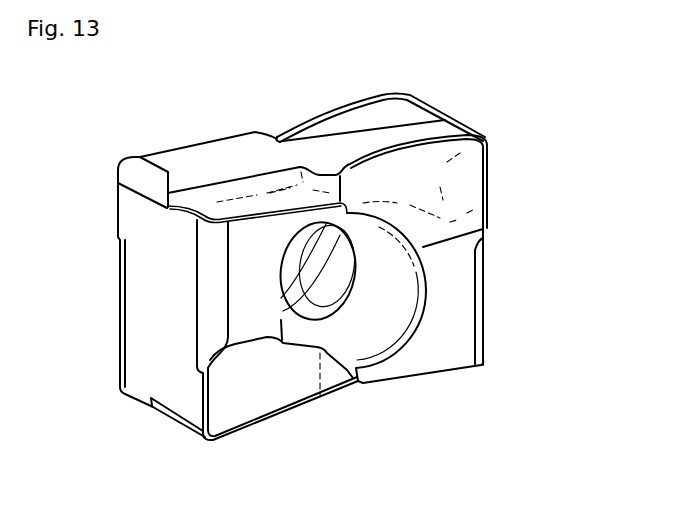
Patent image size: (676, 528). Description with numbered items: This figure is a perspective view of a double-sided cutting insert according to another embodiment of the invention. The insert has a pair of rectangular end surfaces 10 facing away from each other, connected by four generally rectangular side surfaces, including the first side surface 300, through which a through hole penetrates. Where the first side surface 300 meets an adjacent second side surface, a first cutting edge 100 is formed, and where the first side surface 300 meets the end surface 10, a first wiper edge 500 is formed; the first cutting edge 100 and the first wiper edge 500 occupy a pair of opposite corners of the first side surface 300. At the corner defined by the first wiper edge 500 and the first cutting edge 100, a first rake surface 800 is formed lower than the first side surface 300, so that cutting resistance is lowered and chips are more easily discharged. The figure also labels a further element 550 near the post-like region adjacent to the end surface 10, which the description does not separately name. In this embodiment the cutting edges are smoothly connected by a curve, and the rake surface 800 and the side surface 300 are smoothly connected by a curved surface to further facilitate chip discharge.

The end surface 10 is at (142, 306).
The first cutting edge 100 is at (423, 140).
The first side surface 300 is at (443, 373).
The first wiper edge 500 is at (488, 180).
The support post 550 is at (207, 261).
The first rake surface 800 is at (382, 176).